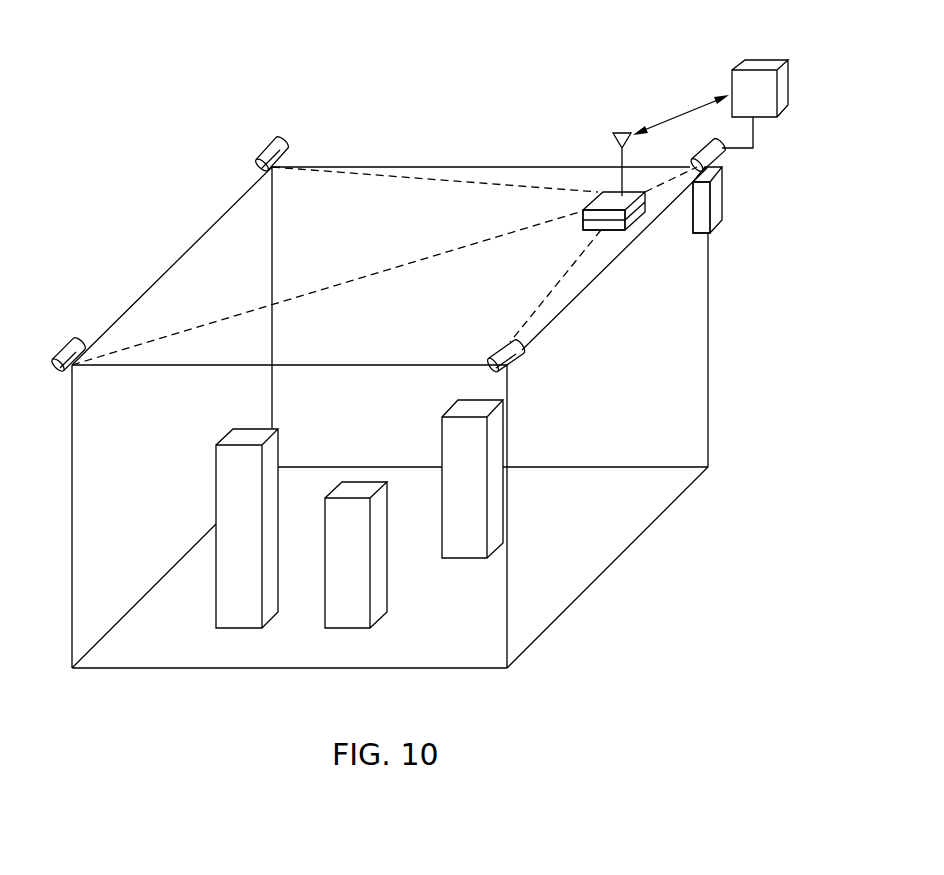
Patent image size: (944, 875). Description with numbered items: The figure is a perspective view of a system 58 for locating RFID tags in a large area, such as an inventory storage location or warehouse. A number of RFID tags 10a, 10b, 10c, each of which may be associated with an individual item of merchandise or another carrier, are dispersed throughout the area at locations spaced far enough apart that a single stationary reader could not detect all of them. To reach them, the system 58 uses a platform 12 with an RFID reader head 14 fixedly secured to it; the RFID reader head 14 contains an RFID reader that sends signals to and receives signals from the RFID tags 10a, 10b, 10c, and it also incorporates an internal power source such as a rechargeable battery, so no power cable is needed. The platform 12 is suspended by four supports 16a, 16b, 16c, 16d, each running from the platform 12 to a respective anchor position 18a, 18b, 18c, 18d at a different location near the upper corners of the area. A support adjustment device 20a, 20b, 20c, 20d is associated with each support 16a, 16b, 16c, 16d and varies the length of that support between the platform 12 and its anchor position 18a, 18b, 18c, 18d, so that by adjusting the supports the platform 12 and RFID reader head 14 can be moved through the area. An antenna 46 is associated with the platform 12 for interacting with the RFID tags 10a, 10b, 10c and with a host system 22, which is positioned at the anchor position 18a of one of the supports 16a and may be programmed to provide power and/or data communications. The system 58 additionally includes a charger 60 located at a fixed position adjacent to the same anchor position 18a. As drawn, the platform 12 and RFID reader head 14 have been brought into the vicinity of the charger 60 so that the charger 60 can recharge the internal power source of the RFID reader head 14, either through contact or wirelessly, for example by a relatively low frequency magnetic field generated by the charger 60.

The RFID tag 10a is at (470, 558).
The RFID tag 10b is at (388, 595).
The RFID tag 10c is at (238, 628).
The platform 12 is at (633, 193).
The RFID reader head 14 is at (635, 222).
The support 16a is at (667, 178).
The support 16b is at (540, 308).
The support 16c is at (405, 265).
The support 16d is at (446, 181).
The anchor position 18a is at (712, 232).
The anchor position 18b is at (510, 368).
The anchor position 18c is at (71, 368).
The anchor position 18d is at (283, 162).
The support adjustment device 20a is at (722, 152).
The support adjustment device 20b is at (522, 350).
The support adjustment device 20c is at (62, 350).
The support adjustment device 20d is at (268, 143).
The host system 22 is at (757, 60).
The antenna 46 is at (620, 155).
The system 58 is at (122, 215).
The charger 60 is at (725, 198).